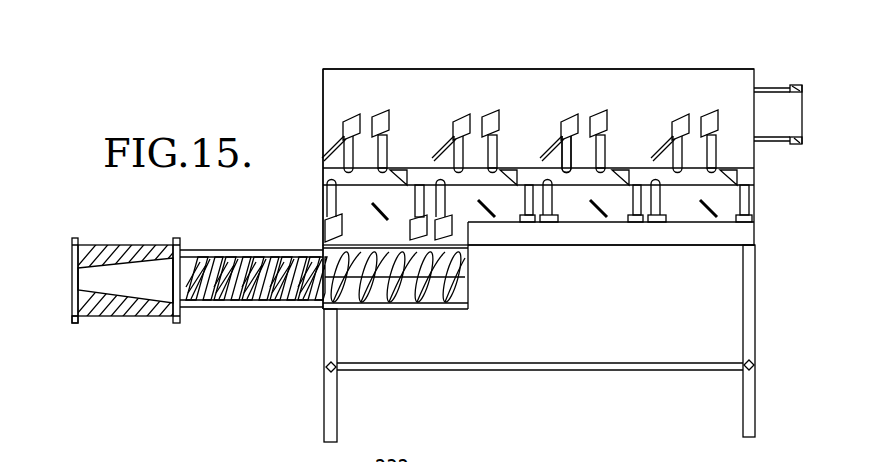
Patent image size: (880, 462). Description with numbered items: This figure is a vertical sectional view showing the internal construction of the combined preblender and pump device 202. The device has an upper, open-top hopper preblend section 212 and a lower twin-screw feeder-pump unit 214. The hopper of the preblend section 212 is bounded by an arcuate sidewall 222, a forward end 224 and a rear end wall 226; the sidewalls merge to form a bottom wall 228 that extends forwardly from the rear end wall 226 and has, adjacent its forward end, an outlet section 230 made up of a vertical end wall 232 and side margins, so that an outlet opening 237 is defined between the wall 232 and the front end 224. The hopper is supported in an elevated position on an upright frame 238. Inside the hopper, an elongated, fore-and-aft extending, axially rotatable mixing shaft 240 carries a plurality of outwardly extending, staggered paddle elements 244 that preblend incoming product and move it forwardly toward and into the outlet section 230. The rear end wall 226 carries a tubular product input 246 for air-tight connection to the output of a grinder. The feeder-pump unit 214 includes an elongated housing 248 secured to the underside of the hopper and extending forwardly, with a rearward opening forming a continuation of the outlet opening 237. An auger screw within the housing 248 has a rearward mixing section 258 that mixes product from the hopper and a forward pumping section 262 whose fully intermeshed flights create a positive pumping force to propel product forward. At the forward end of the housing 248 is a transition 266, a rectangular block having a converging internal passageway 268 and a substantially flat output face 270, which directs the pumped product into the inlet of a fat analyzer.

The combined preblender and pump device 202 is at (285, 75).
The hopper preblend section 212 is at (538, 121).
The twin-screw feeder-pump unit 214 is at (184, 305).
The arcuate sidewall 222 is at (433, 78).
The forward end 224 is at (322, 100).
The rear end wall 226 is at (789, 110).
The bottom wall 228 is at (645, 247).
The outlet section 230 is at (419, 268).
The vertical end wall 232 is at (468, 257).
The outlet opening 237 is at (314, 218).
The upright frame 238 is at (780, 363).
The mixing shaft 240 is at (527, 175).
The paddle element 244 is at (602, 147).
The tubular product input 246 is at (796, 147).
The housing 248 is at (221, 250).
The rearward mixing section 258 is at (402, 302).
The forward pumping section 262 is at (245, 312).
The transition 266 is at (125, 312).
The converging internal passageway 268 is at (78, 282).
The output face 270 is at (72, 326).